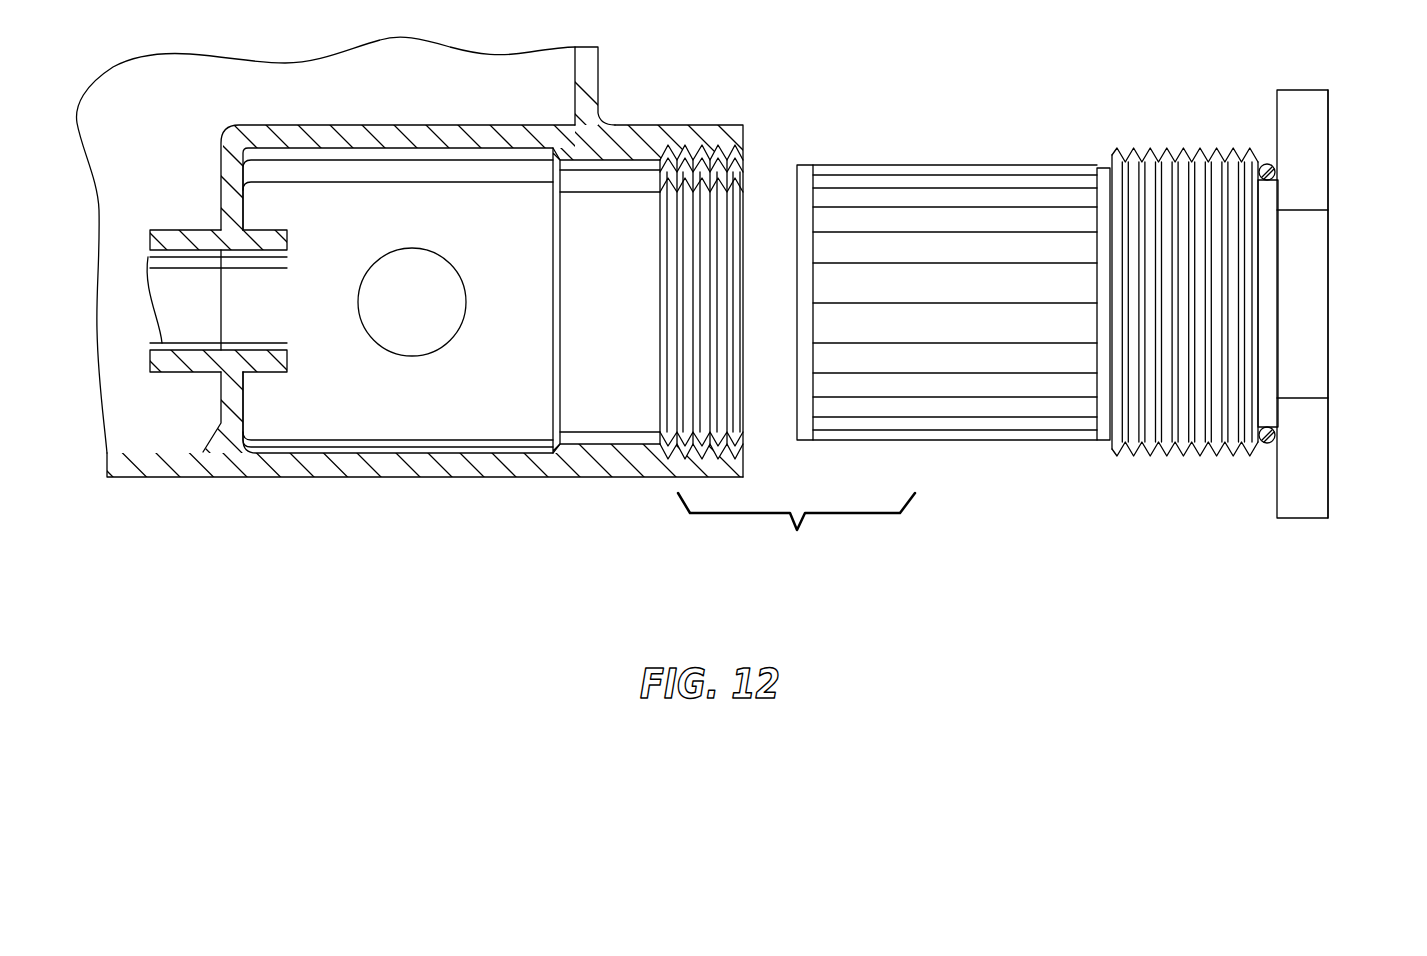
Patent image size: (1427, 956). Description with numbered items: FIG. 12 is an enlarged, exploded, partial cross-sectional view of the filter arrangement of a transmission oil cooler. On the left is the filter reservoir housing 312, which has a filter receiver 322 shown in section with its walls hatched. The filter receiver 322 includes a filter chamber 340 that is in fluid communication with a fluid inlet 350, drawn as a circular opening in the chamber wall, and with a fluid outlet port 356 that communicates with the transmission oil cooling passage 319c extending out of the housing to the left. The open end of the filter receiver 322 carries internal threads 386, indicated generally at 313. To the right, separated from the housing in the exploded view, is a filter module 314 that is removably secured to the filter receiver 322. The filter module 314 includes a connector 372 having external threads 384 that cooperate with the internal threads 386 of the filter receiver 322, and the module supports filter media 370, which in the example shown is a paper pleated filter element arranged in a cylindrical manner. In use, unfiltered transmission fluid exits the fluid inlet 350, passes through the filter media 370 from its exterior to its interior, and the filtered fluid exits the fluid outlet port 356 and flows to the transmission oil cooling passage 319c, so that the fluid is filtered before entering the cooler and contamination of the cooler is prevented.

The filter reservoir housing 312 is at (600, 82).
The connector end 313 is at (757, 110).
The filter module 314 is at (1355, 148).
The transmission oil cooling passage 319c is at (175, 350).
The filter receiver 322 is at (416, 116).
The filter chamber 340 is at (521, 242).
The fluid inlet 350 is at (380, 336).
The fluid outlet port 356 is at (267, 256).
The filter media 370 is at (972, 198).
The connector 372 is at (1308, 72).
The external threads 384 is at (1232, 173).
The internal threads 386 is at (698, 312).